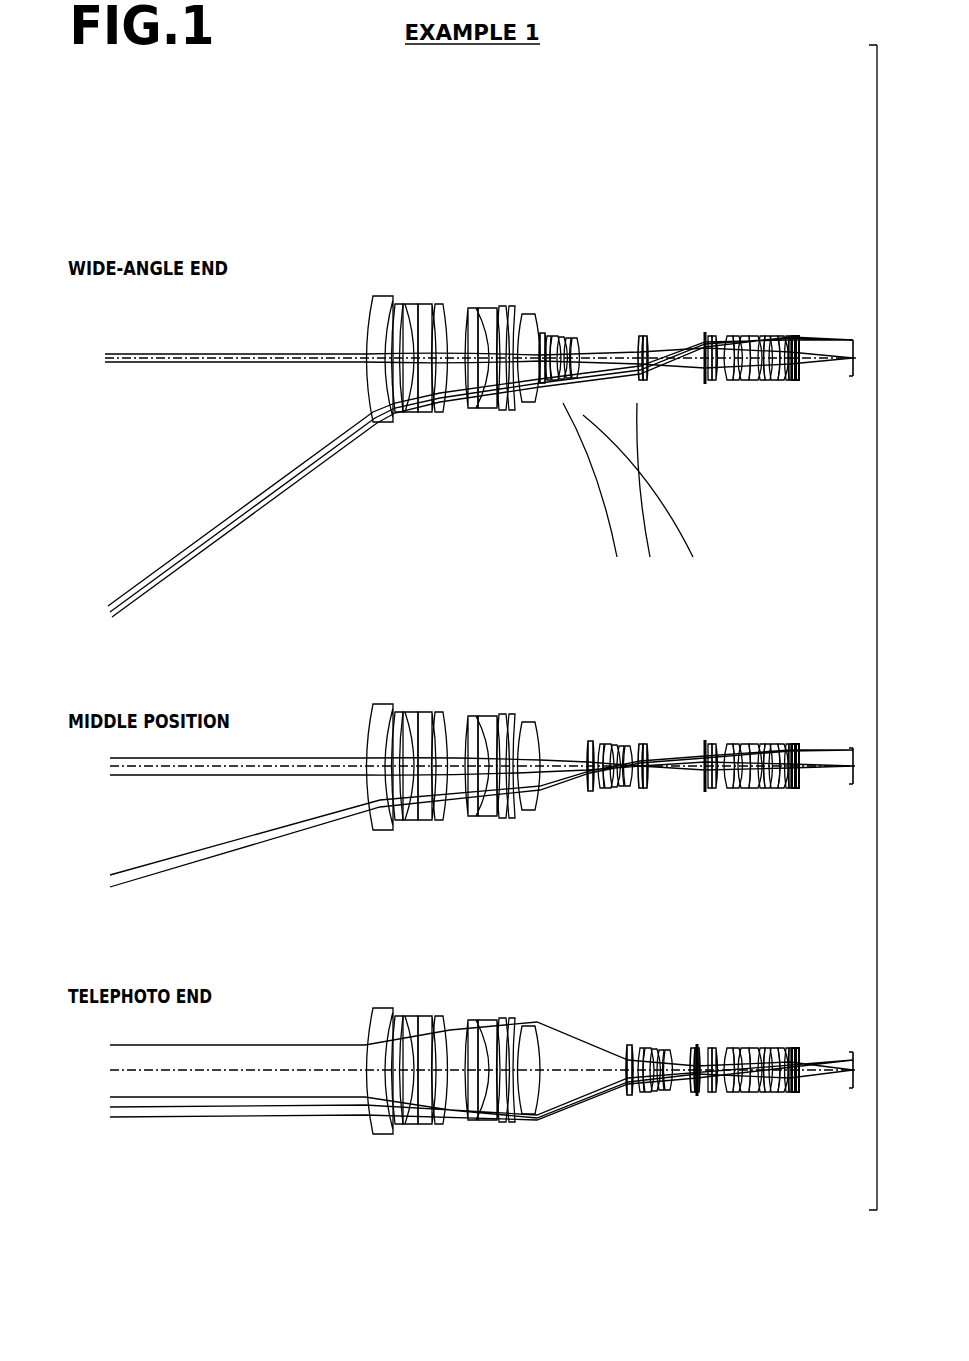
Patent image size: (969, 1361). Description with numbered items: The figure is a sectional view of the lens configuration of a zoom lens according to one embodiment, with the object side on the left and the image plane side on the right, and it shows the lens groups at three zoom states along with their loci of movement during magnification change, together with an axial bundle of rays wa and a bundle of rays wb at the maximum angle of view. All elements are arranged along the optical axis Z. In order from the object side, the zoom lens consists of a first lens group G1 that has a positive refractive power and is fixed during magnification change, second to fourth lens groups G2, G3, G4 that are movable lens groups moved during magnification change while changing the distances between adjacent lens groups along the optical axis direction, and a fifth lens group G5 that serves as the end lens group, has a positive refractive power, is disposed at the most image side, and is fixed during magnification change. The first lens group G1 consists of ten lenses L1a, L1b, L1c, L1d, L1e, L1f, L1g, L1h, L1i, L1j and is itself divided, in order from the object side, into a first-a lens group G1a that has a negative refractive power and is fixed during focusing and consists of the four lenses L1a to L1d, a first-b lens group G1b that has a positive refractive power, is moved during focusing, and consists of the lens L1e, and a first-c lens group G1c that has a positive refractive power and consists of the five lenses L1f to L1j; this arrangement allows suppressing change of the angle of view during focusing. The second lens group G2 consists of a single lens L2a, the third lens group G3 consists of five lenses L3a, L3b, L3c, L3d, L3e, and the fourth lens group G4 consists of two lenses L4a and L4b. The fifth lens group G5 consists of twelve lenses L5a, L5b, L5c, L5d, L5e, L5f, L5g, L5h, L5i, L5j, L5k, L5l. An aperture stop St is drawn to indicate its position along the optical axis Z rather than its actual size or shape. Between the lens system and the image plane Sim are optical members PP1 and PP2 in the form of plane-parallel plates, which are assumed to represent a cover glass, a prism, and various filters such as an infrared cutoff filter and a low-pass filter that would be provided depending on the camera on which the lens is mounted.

The first lens group G1 is at (215, 96).
The first-a lens group G1a is at (298, 132).
The first-b lens group G1b is at (300, 132).
The first-c lens group G1c is at (478, 132).
The lens L1a is at (370, 298).
The lens L1b is at (395, 304).
The lens L1c is at (410, 304).
The lens L1d is at (425, 304).
The lens L1e is at (440, 302).
The lens L1f is at (470, 306).
The lens L1g is at (484, 306).
The lens L1h is at (500, 304).
The lens L1i is at (512, 304).
The lens L1j is at (528, 312).
The second lens group G2 is at (485, 234).
The lens L2a is at (540, 332).
The third lens group G3 is at (515, 554).
The lens L3a is at (548, 382).
The lens L3b is at (554, 382).
The lens L3c is at (562, 381).
The lens L3d is at (569, 380).
The lens L3e is at (575, 379).
The fourth lens group G4 is at (487, 132).
The lens L4a is at (639, 334).
The lens L4b is at (645, 334).
The fifth lens group G5 is at (573, 132).
The lens L5a is at (707, 334).
The lens L5b is at (712, 334).
The lens L5c is at (725, 334).
The lens L5d is at (735, 334).
The lens L5e is at (744, 334).
The lens L5f is at (752, 334).
The lens L5g is at (760, 334).
The lens L5h is at (767, 334).
The lens L5i is at (774, 334).
The lens L5j is at (781, 334).
The lens L5k is at (788, 334).
The lens L5l is at (794, 334).
The aperture stop St is at (705, 386).
The optical member PP1 is at (790, 382).
The optical member PP2 is at (797, 382).
The image plane Sim is at (853, 378).
The optical axis Z is at (135, 354).
The axial bundle of rays wa is at (105, 350).
The bundle of rays at the maximum angle of view wb is at (105, 598).